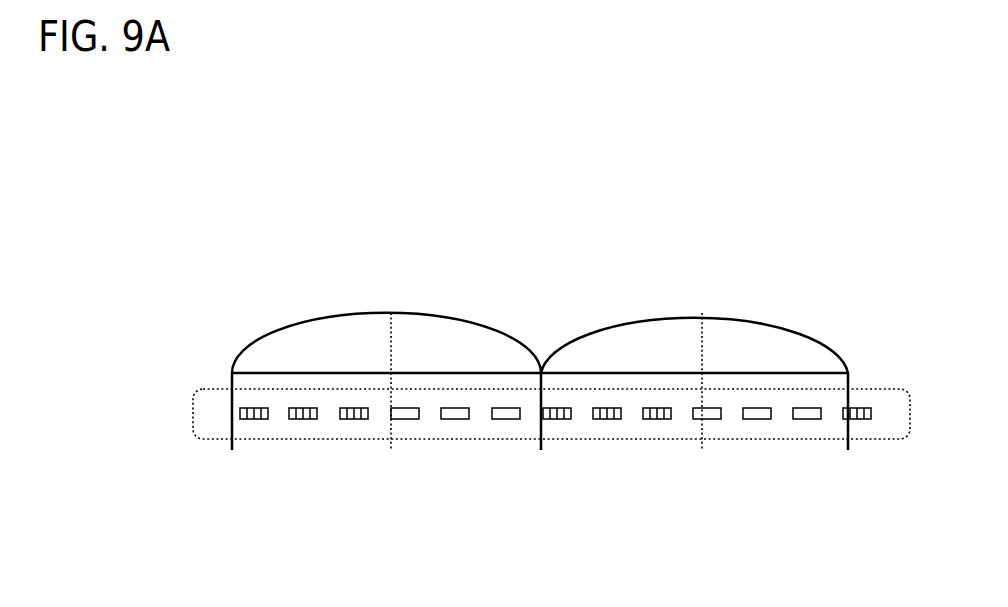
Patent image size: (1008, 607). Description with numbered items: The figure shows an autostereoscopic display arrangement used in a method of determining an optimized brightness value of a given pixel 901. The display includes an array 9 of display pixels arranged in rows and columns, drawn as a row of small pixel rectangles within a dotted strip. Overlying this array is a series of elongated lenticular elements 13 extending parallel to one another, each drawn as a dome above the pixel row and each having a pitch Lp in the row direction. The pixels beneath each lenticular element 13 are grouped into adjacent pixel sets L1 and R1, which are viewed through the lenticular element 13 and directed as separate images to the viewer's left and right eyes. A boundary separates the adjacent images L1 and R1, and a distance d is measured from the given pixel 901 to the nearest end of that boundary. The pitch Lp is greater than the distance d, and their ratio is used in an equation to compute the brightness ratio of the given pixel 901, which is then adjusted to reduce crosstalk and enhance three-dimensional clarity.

The array of display pixels 9 is at (210, 445).
The given pixel 901 is at (453, 420).
The lenticular element 13 is at (308, 320).
The pixel set L1 is at (288, 391).
The pixel set R1 is at (457, 391).
The pitch Lp is at (390, 459).
The distance d is at (453, 447).